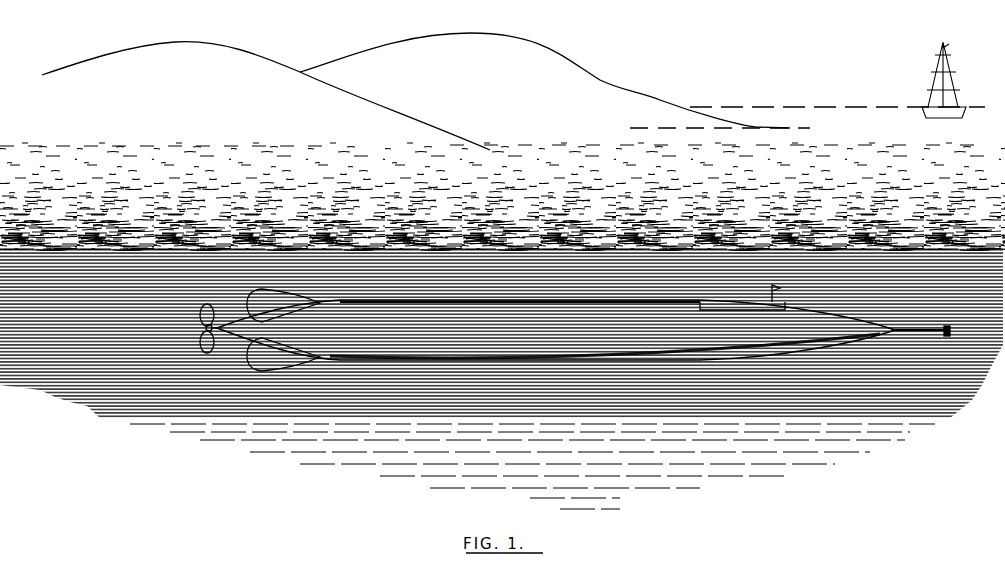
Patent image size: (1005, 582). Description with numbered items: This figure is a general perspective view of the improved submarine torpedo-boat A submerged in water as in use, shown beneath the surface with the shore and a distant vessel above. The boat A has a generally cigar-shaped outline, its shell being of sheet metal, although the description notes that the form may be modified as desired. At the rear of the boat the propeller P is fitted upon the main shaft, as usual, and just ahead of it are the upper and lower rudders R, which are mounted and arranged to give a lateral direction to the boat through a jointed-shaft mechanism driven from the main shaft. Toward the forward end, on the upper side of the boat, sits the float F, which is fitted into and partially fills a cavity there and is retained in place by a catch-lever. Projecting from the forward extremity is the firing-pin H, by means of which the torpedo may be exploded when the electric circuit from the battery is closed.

The submarine torpedo-boat A is at (556, 330).
The rudders R is at (262, 300).
The propeller P is at (199, 341).
The float F is at (724, 304).
The firing-pin H is at (930, 328).